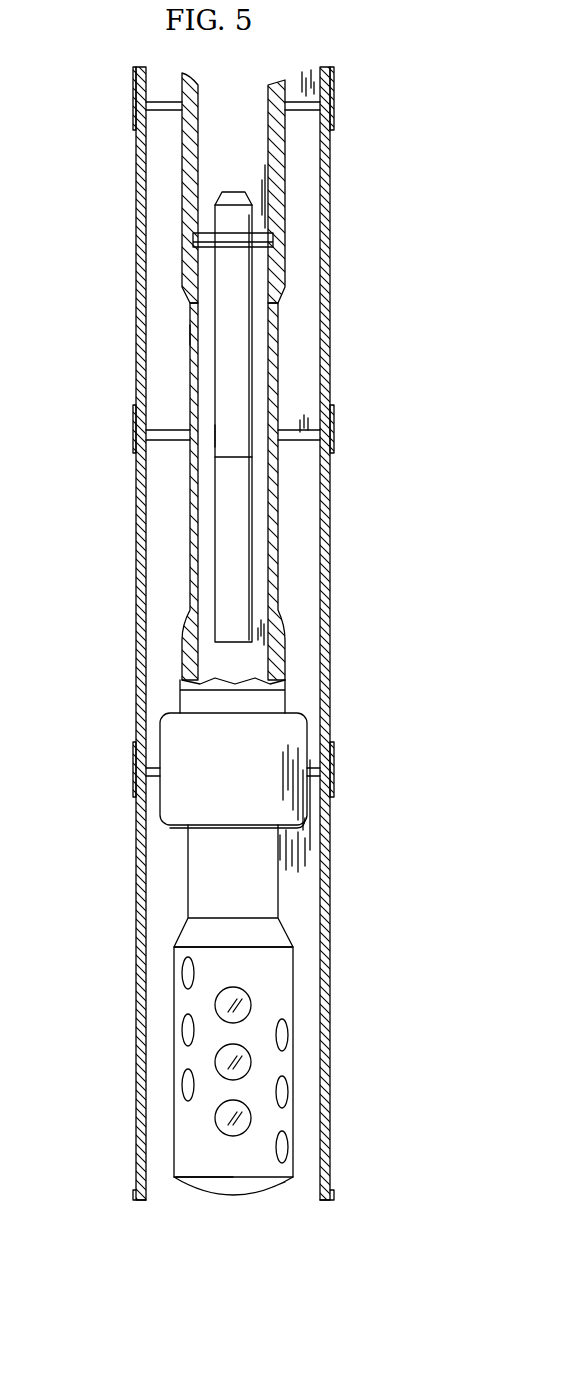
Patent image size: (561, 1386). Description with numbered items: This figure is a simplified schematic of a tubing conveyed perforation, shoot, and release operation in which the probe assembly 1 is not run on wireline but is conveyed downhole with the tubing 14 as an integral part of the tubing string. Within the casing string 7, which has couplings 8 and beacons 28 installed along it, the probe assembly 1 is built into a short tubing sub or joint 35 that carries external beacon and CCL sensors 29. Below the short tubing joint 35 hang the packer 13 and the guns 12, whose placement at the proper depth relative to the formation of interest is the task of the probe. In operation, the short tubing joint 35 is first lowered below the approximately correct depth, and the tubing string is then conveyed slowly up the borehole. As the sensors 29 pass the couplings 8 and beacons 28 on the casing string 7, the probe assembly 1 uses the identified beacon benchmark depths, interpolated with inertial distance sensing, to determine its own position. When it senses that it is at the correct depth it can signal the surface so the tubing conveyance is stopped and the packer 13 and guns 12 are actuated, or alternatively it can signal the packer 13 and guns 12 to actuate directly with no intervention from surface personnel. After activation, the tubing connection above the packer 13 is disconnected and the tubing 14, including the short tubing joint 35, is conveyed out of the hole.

The probe assembly 1 is at (258, 363).
The casing string 7 is at (140, 1015).
The couplings 8 is at (133, 755).
The guns 12 is at (293, 1035).
The packer 13 is at (308, 740).
The tubing 14 is at (287, 157).
The beacons 28 is at (332, 435).
The external beacon and CCL sensors 29 is at (213, 435).
The short tubing sub or joint 35 is at (277, 610).